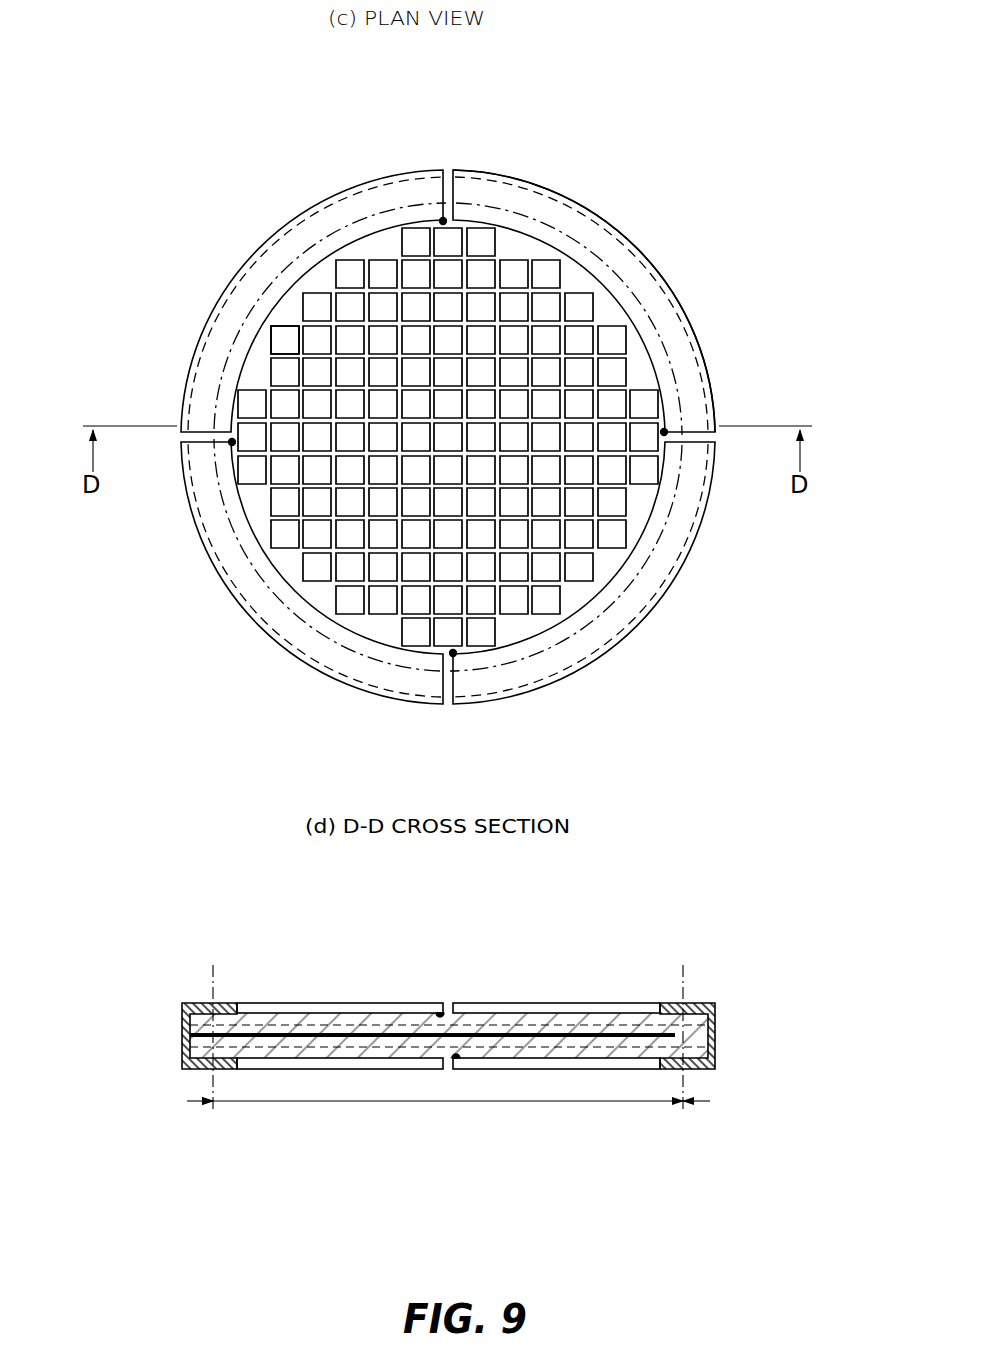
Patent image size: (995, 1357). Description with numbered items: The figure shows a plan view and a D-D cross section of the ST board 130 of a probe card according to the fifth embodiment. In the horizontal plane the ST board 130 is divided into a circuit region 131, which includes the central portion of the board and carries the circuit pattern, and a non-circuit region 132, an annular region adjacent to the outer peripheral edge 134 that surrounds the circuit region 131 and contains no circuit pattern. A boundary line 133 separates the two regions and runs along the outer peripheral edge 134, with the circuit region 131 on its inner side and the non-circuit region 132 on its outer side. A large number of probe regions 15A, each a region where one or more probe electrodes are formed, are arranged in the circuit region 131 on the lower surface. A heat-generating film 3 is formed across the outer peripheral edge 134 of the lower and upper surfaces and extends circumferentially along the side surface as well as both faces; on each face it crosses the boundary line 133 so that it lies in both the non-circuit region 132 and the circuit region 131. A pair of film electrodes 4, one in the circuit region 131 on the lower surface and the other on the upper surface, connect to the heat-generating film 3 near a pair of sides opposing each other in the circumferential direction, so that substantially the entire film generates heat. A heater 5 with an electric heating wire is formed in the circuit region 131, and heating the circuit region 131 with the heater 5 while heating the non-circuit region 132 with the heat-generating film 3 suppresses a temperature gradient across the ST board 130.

The heat-generating film 3 is at (285, 225).
The film electrode 4 is at (441, 222).
The heater 5 is at (520, 1035).
The probe region 15A is at (278, 340).
The ST board 130 is at (567, 114).
The circuit region 131 is at (575, 270).
The non-circuit region 132 is at (672, 330).
The boundary line 133 is at (640, 300).
The outer peripheral edge 134 is at (695, 531).